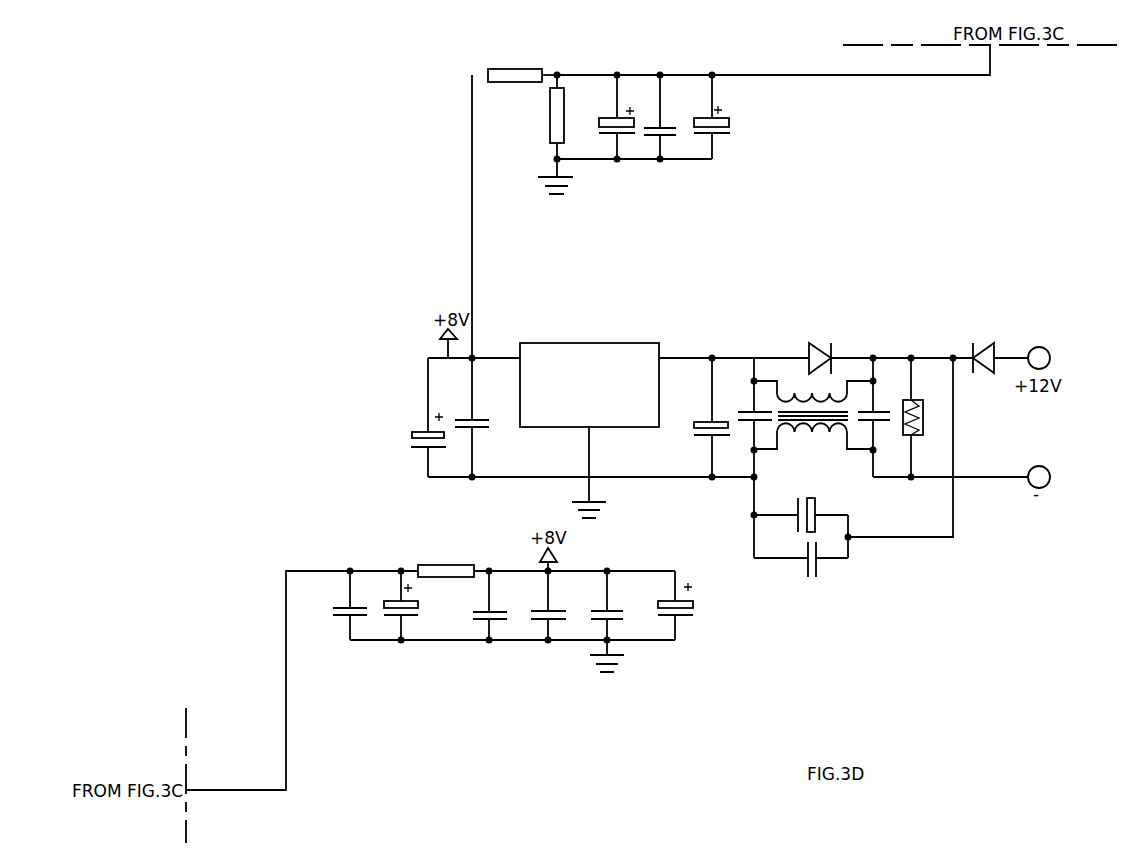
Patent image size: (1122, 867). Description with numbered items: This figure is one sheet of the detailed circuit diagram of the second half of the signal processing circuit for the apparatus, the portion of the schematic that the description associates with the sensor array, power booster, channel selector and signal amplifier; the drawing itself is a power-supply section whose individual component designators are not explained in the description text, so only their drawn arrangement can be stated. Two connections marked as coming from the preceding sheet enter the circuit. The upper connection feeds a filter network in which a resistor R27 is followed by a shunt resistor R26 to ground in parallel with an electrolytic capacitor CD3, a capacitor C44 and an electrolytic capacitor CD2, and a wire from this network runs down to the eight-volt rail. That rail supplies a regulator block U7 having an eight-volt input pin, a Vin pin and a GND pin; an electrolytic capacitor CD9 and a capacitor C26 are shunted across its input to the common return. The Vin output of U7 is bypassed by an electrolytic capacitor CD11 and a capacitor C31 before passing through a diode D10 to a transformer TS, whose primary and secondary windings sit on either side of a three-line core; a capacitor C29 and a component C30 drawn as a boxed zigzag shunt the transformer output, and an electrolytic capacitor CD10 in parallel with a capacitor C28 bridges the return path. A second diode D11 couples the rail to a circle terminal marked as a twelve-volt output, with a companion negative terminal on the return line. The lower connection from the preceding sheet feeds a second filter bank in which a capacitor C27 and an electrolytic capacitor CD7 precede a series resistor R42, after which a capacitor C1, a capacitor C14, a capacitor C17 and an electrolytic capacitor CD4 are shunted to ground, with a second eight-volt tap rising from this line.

The resistor R27 is at (522, 63).
The resistor R26 is at (541, 117).
The electrolytic capacitor CD3 is at (609, 117).
The capacitor C44 is at (671, 117).
The electrolytic capacitor CD2 is at (727, 117).
The voltage regulator U7 is at (589, 369).
The electrolytic capacitor CD9 is at (419, 417).
The capacitor C26 is at (486, 417).
The electrolytic capacitor CD11 is at (700, 417).
The capacitor C31 is at (747, 458).
The transformer TS (E13-2) TS is at (813, 413).
The diode D10 is at (820, 342).
The diode D11 is at (982, 345).
The capacitor C29 is at (887, 417).
The varistor C30 is at (930, 417).
The electrolytic capacitor CD10 is at (801, 526).
The capacitor C28 is at (801, 563).
The capacitor C27 is at (341, 605).
The electrolytic capacitor CD7 is at (416, 605).
The resistor R42 is at (446, 560).
The capacitor C1 is at (486, 605).
The capacitor C14 is at (560, 605).
The capacitor C17 is at (625, 605).
The electrolytic capacitor CD4 is at (694, 605).